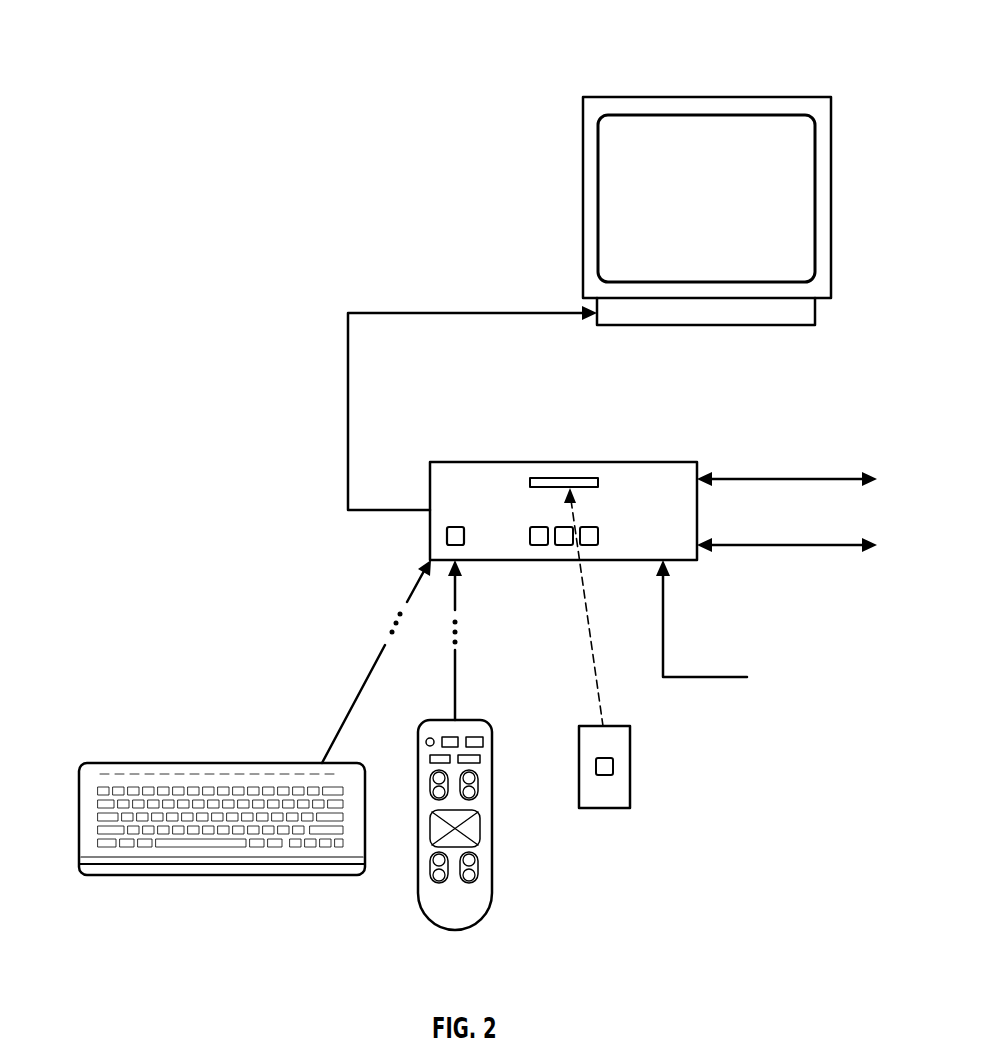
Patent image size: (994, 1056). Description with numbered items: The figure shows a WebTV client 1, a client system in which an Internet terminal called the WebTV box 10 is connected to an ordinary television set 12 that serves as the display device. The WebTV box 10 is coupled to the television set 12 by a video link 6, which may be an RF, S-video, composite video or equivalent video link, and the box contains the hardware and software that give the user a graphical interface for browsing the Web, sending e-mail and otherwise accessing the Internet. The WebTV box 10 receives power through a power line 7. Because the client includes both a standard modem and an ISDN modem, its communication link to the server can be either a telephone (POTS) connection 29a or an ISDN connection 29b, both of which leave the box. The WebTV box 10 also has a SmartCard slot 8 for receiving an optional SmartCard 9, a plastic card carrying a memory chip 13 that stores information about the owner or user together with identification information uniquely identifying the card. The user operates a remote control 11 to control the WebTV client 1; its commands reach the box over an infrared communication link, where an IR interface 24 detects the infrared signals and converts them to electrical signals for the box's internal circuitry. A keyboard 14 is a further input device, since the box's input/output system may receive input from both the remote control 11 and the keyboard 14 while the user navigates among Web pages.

The WebTV client 1 is at (815, 50).
The television set 12 is at (801, 268).
The video link 6 is at (347, 390).
The WebTV box 10 is at (686, 553).
The SmartCard slot 8 is at (559, 477).
The IR interface 24 is at (464, 536).
The telephone (POTS) connection 29a is at (740, 476).
The ISDN connection 29b is at (740, 542).
The power line 7 is at (717, 678).
The SmartCard 9 is at (630, 800).
The memory chip 13 is at (613, 766).
The remote control 11 is at (464, 923).
The keyboard 14 is at (208, 763).